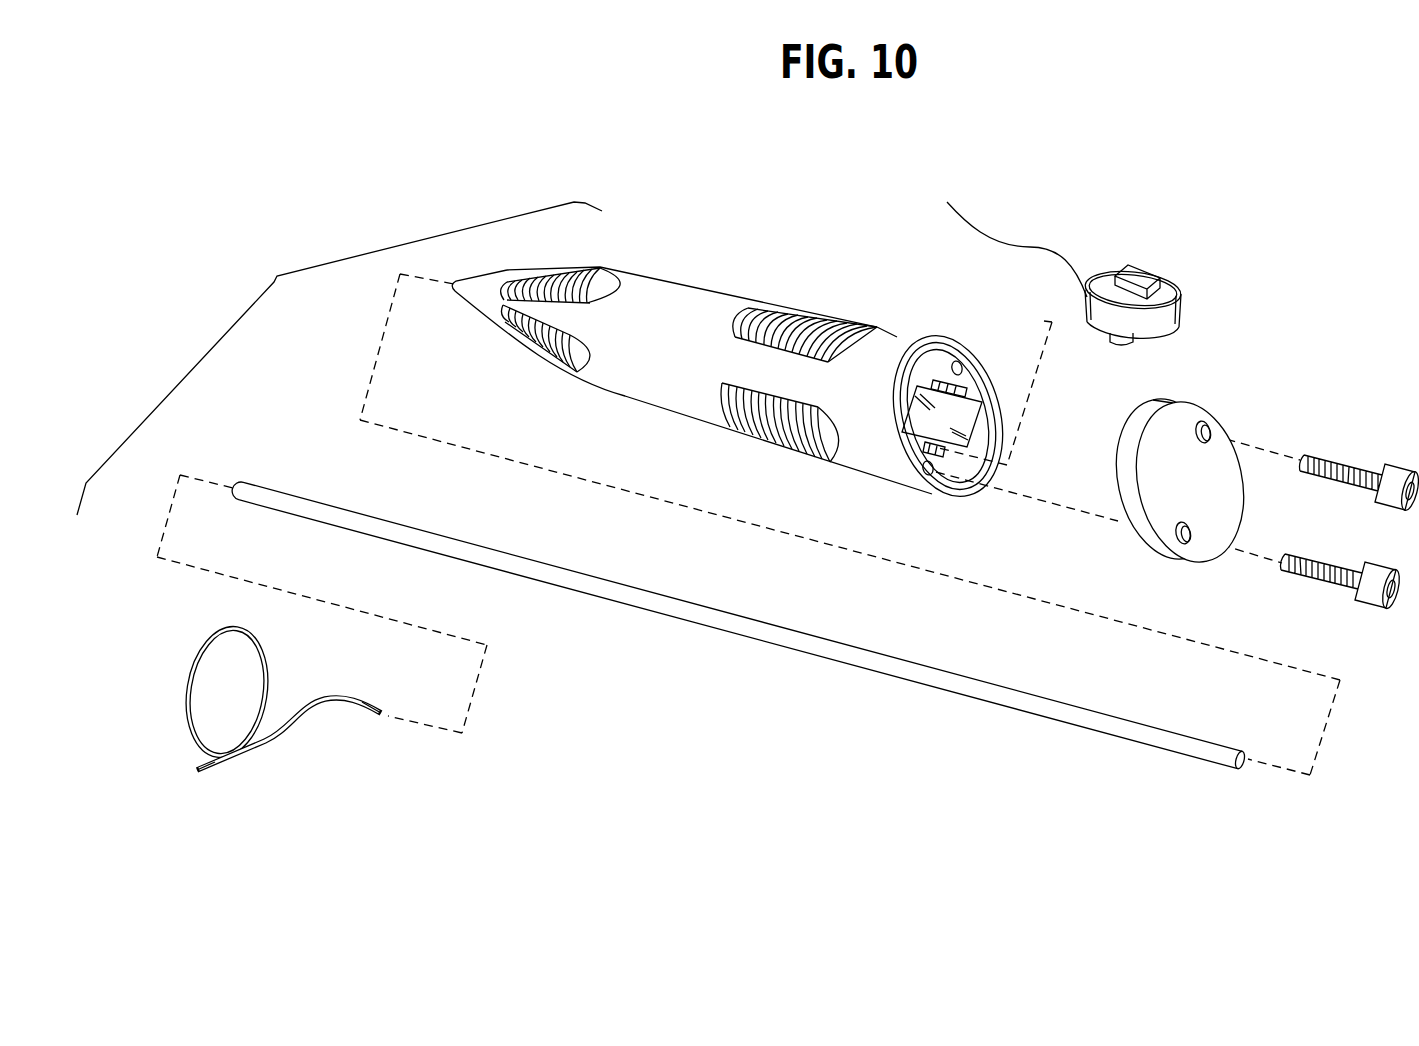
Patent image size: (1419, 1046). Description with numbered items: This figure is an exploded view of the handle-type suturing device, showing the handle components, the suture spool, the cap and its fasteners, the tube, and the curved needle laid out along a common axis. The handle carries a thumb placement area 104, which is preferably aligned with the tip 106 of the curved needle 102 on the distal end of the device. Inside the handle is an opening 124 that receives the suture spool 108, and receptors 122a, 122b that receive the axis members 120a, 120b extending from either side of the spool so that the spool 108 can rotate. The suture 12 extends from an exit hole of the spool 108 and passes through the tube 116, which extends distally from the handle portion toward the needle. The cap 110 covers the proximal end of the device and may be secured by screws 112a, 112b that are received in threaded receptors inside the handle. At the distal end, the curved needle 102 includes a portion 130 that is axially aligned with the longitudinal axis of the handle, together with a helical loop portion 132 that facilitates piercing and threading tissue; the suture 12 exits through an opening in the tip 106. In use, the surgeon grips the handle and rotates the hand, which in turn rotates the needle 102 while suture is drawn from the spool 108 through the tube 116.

The suture 12 is at (983, 227).
The thumb placement area 104 is at (546, 258).
The opening 124 is at (914, 392).
The receptor 122a is at (942, 380).
The receptor 122b is at (927, 448).
The suture spool 108 is at (1180, 310).
The axis member 120a is at (1140, 273).
The axis member 120b is at (1136, 346).
The cap 110 is at (1133, 533).
The screw 112a is at (1318, 446).
The screw 112b is at (1326, 588).
The tube 116 is at (870, 670).
The curved needle 102 is at (250, 730).
The helical loop portion 132 is at (198, 653).
The tip 106 is at (199, 773).
The portion 130 is at (361, 719).